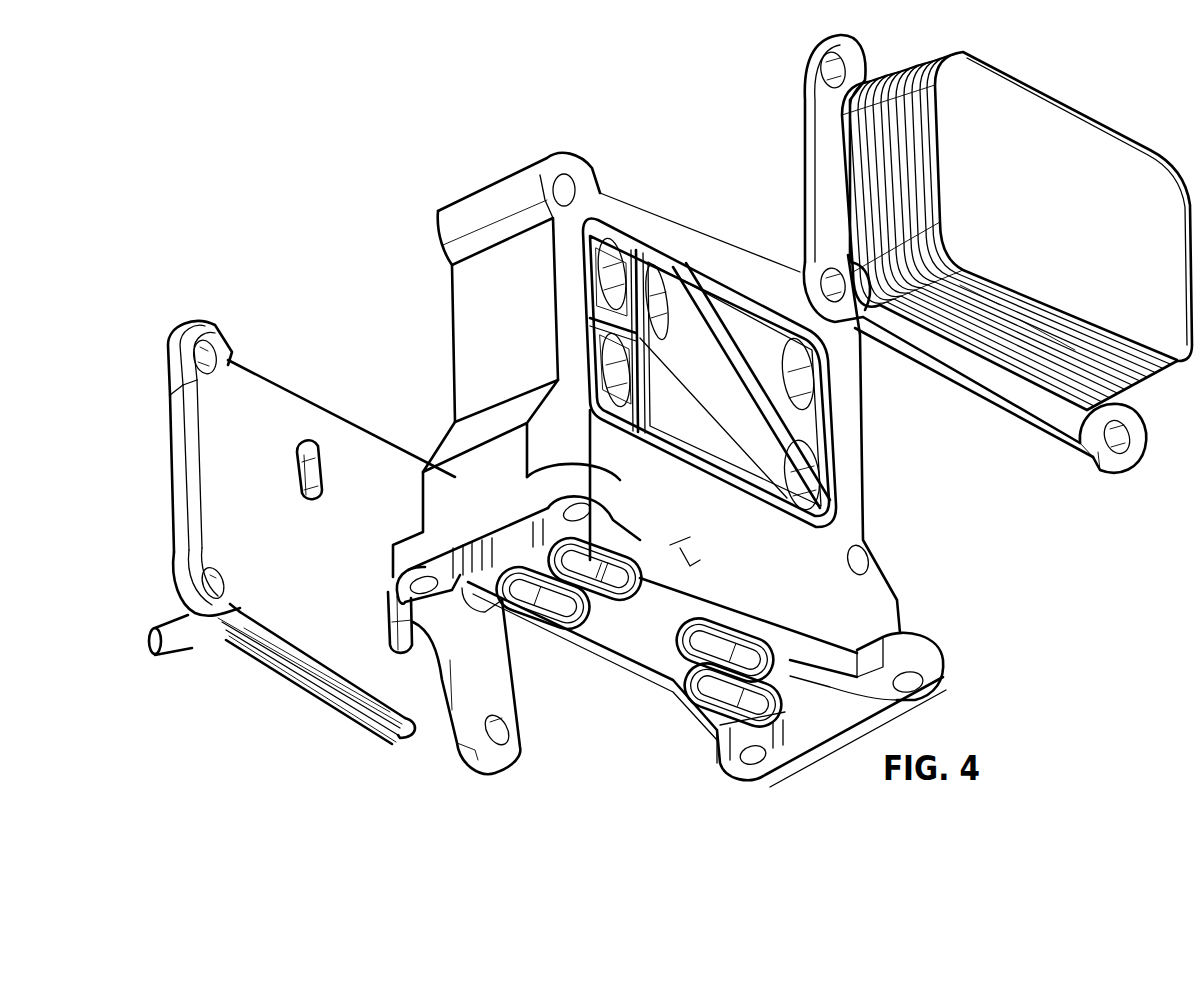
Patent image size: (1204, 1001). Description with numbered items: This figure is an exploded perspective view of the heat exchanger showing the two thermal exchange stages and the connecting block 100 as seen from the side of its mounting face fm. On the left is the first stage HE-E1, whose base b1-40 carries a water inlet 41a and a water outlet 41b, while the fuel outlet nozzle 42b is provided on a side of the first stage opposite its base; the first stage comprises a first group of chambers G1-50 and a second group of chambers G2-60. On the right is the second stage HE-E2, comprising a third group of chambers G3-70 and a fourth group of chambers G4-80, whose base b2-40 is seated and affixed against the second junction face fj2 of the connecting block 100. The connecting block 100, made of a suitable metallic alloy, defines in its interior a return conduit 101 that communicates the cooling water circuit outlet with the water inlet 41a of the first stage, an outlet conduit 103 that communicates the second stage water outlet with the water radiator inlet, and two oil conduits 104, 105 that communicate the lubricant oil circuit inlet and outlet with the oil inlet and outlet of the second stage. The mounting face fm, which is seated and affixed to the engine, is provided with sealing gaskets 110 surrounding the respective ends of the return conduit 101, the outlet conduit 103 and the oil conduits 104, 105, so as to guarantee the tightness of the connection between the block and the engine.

The connecting block 100 is at (440, 214).
The return conduit 101 is at (553, 597).
The outlet conduit 103 is at (743, 690).
The oil conduit 104 is at (668, 608).
The oil conduit 105 is at (737, 645).
The sealing gaskets 110 is at (466, 555).
The water inlet 41a is at (406, 621).
The water outlet 41b is at (298, 478).
The fuel outlet nozzle 42b is at (182, 640).
The base of the first stage b1-40 is at (255, 405).
The base of the second stage b2-40 is at (802, 64).
The second junction face fj2 is at (573, 210).
The mounting face fm is at (880, 688).
The first group of chambers G1-50 is at (364, 706).
The second group of chambers G2-60 is at (333, 693).
The third group of chambers G3-70 is at (987, 300).
The fourth group of chambers G4-80 is at (1038, 318).
The first stage of the heat exchanger HE-E1 is at (265, 672).
The second stage of the heat exchanger HE-E2 is at (1150, 407).